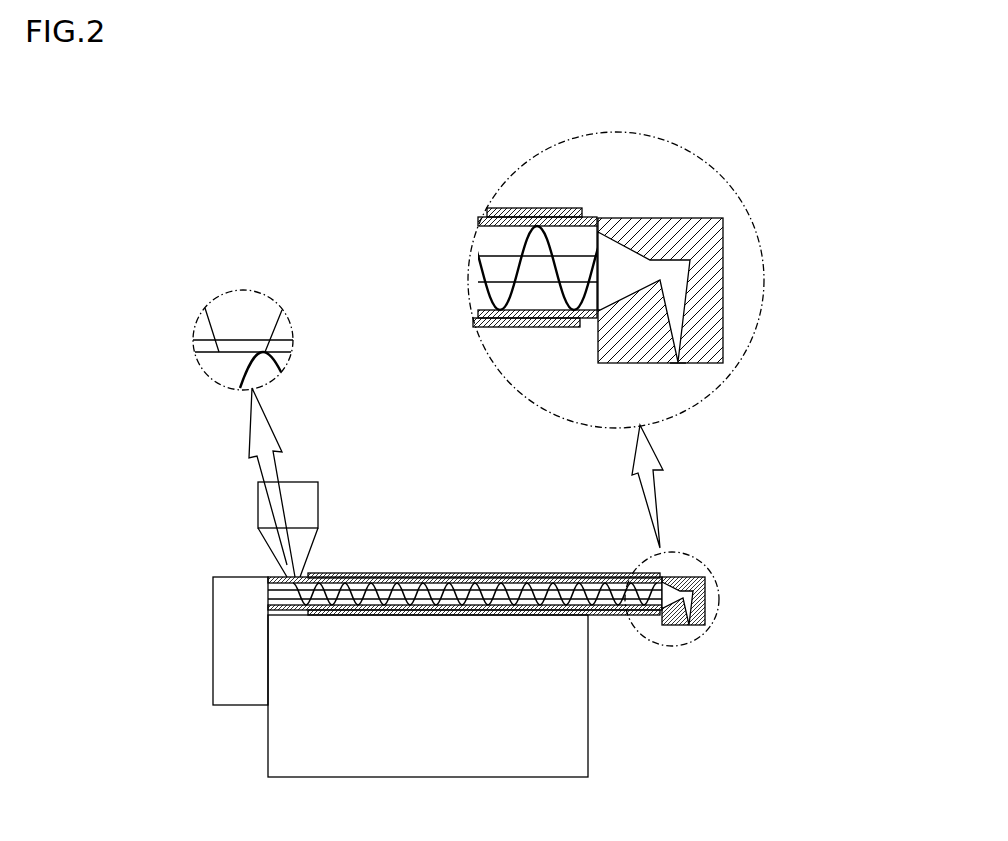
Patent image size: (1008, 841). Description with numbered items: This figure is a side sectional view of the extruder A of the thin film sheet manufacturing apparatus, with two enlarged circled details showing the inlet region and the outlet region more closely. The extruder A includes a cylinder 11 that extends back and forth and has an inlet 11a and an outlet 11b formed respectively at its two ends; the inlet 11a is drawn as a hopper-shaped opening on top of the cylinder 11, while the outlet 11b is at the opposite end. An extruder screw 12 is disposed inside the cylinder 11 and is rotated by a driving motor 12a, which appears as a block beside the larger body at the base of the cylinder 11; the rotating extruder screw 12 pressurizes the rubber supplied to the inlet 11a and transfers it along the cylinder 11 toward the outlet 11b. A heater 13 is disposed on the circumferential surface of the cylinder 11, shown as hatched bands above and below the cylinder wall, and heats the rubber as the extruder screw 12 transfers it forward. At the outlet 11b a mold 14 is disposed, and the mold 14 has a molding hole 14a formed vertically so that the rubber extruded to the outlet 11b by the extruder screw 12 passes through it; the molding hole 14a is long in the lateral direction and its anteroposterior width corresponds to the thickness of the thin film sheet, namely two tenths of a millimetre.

The extruder A is at (222, 543).
The cylinder 11 is at (357, 577).
The inlet 11a is at (238, 340).
The outlet 11b is at (634, 219).
The extruder screw 12 is at (482, 590).
The driving motor 12a is at (213, 632).
The heater 13 is at (415, 573).
The mold 14 is at (705, 588).
The molding hole 14a is at (677, 363).